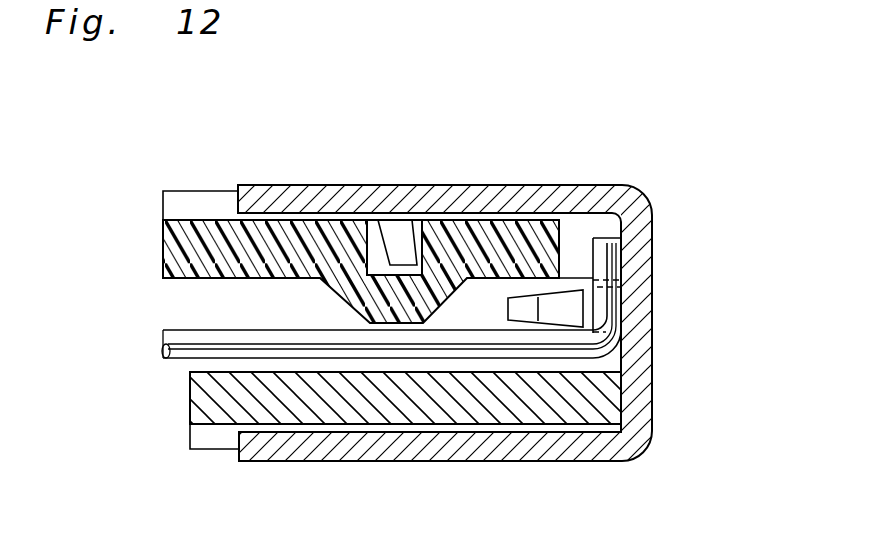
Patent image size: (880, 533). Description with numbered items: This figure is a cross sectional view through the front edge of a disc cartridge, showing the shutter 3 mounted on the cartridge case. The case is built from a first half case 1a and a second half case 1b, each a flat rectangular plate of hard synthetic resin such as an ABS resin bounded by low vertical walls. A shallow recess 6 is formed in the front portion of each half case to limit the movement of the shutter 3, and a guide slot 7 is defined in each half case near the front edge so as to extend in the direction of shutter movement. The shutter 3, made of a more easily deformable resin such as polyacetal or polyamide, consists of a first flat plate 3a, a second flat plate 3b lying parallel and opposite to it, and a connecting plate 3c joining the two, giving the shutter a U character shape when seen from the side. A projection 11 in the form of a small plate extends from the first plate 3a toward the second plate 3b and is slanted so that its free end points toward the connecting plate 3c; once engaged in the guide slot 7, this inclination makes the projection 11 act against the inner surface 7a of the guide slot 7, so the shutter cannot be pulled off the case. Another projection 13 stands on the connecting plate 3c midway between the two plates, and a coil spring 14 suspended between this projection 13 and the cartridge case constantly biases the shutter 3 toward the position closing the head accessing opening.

The first half case 1a is at (166, 248).
The second half case 1b is at (190, 398).
The shutter 3 is at (523, 450).
The first flat plate 3a is at (272, 183).
The second flat plate 3b is at (303, 448).
The connecting plate 3c is at (632, 368).
The shallow recess 6 is at (193, 203).
The guide slot 7 is at (372, 237).
The inner surface of the guide slot 7a is at (420, 240).
The projection 11 is at (398, 243).
The projection 13 is at (567, 312).
The coil spring 14 is at (172, 328).